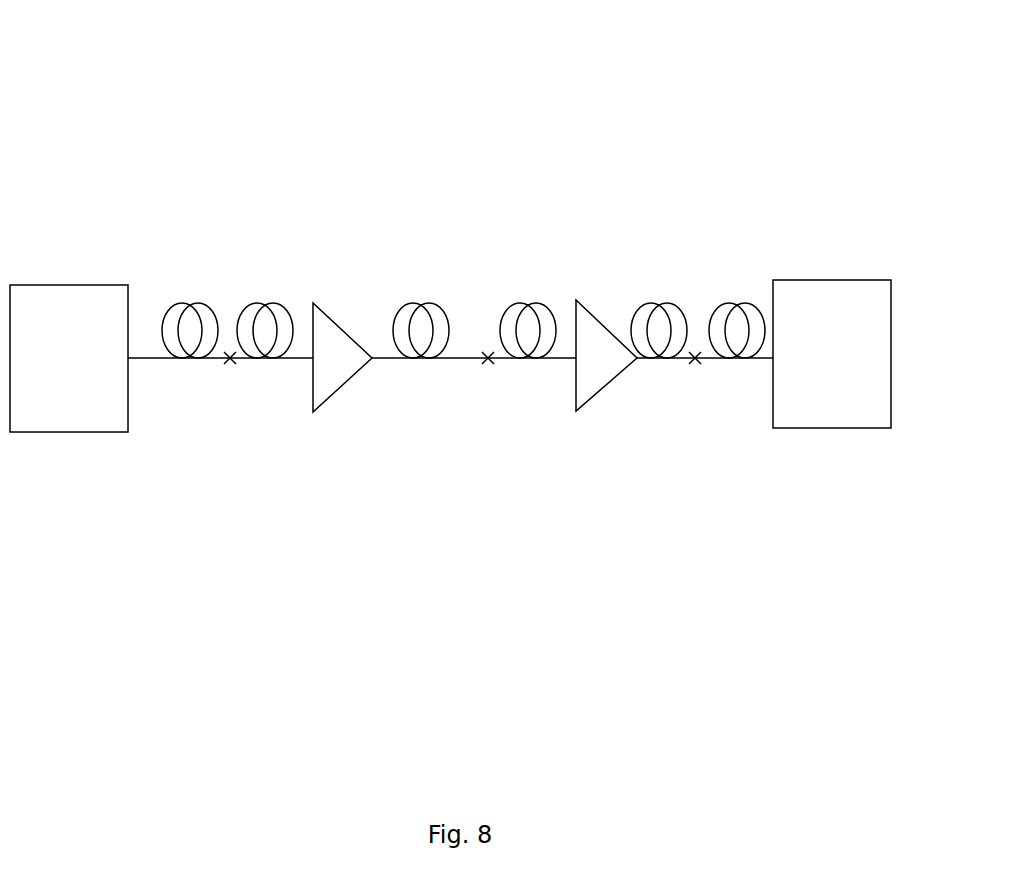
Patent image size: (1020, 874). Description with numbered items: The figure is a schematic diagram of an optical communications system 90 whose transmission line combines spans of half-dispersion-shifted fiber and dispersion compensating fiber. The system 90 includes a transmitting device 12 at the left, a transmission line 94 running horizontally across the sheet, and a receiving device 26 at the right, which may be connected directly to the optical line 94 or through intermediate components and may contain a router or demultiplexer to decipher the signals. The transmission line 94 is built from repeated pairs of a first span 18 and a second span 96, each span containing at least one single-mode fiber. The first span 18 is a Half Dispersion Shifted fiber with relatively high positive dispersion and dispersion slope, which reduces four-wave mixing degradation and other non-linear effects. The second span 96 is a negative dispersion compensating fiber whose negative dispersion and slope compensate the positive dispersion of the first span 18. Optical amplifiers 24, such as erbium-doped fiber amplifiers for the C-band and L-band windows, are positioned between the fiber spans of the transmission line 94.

The optical communications system 90 is at (418, 116).
The transmitting device 12 is at (68, 285).
The receiving device 26 is at (837, 280).
The first span 18 is at (182, 303).
The second span 96 is at (275, 303).
The optical amplifiers 24 is at (610, 383).
The transmission line 94 is at (250, 514).